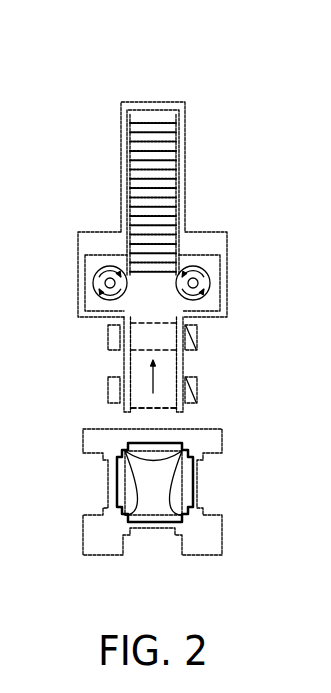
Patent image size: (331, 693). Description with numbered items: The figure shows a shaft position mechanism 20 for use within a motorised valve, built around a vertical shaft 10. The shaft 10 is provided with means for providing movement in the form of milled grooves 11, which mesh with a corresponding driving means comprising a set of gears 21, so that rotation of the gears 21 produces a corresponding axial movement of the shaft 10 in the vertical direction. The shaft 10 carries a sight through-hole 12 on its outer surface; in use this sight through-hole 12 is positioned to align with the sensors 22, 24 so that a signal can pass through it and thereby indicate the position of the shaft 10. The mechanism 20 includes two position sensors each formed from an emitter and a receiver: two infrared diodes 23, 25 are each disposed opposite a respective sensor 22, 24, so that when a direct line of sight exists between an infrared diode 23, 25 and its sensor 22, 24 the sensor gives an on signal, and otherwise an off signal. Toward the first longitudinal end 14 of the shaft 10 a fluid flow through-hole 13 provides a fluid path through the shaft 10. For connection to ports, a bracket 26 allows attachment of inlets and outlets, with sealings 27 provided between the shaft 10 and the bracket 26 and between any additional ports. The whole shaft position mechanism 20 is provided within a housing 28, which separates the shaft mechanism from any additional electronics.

The vertical shaft 10 is at (150, 120).
The grooves 11 is at (155, 217).
The sight through-hole 12 is at (152, 335).
The fluid flow through-hole 13 is at (140, 422).
The first longitudinal end 14 is at (143, 458).
The shaft position mechanism 20 is at (162, 88).
The set of gears 21 is at (210, 282).
The sensor 22 is at (113, 340).
The infrared diode 23 is at (197, 337).
The sensor 24 is at (112, 388).
The infrared diode 25 is at (197, 390).
The bracket 26 is at (210, 440).
The sealings 27 is at (187, 493).
The housing 28 is at (178, 105).